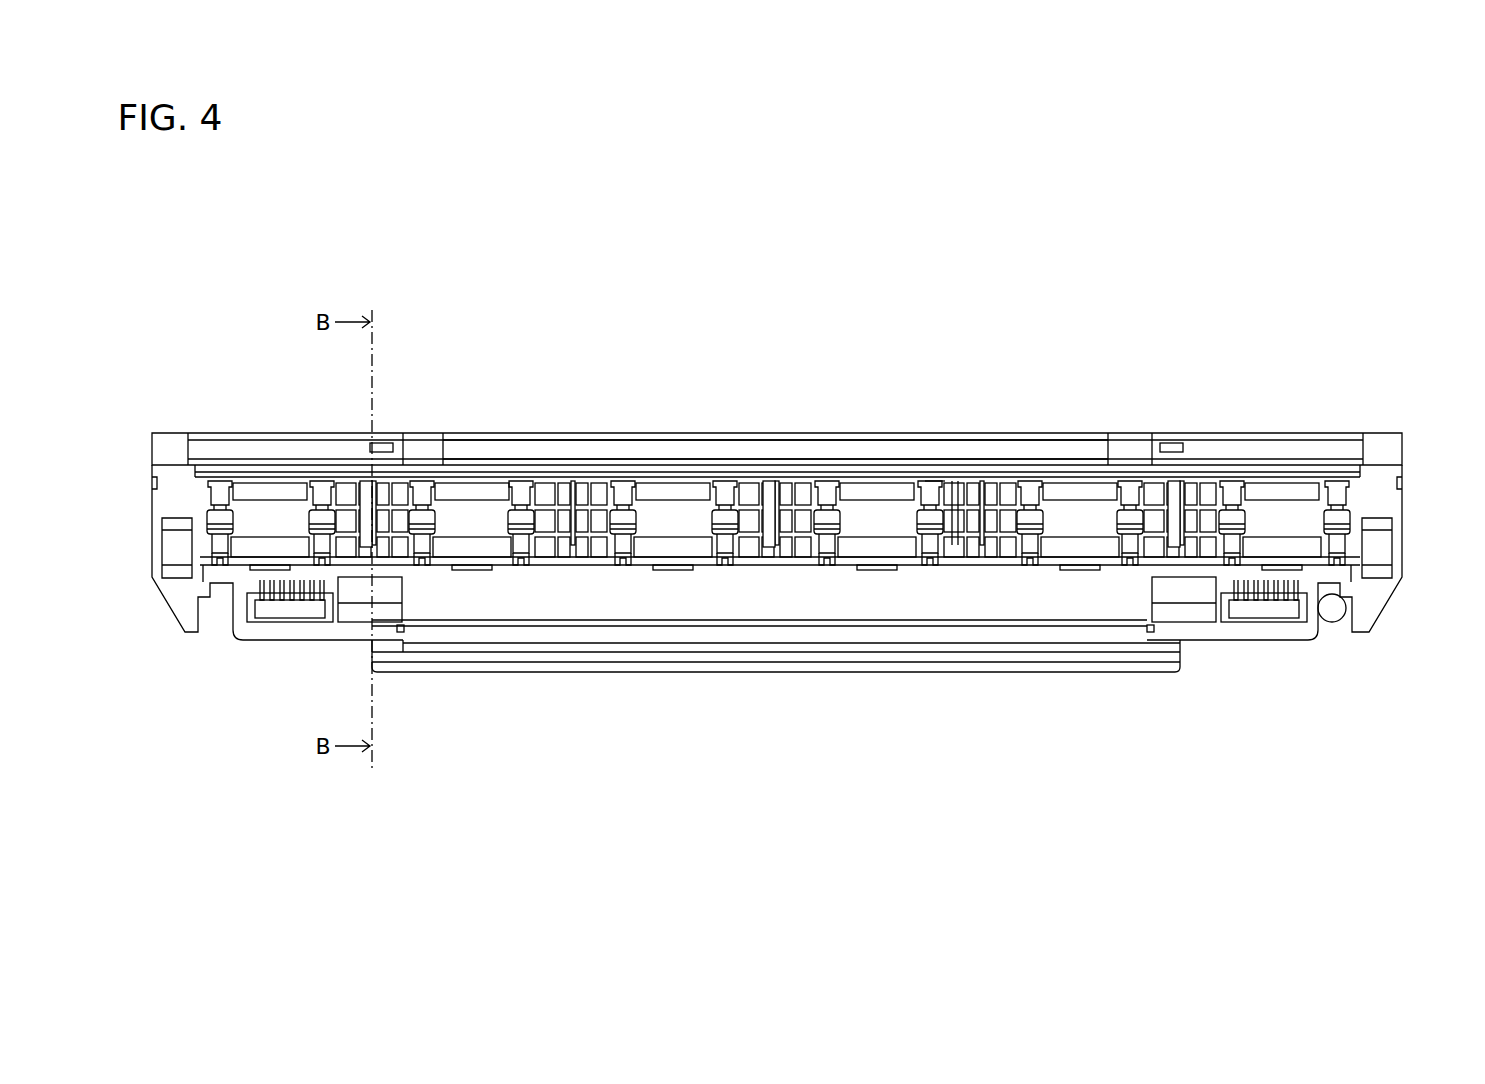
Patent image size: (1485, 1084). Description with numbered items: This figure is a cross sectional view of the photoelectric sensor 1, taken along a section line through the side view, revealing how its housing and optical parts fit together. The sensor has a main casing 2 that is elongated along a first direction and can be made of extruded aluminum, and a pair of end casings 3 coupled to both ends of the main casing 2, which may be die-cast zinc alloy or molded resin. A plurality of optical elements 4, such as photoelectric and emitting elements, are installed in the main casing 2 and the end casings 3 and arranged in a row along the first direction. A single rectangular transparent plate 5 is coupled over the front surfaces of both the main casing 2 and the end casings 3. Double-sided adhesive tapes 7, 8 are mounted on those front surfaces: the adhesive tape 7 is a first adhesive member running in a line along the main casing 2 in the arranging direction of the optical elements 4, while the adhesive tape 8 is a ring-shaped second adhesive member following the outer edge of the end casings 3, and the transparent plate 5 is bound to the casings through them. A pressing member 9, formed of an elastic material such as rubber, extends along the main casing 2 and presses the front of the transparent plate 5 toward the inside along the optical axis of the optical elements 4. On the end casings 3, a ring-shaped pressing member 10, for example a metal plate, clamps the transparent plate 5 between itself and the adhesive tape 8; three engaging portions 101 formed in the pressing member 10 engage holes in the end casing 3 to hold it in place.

The photoelectric sensor 1 is at (1275, 292).
The main casing 2 is at (1024, 672).
The end casing 3 is at (168, 610).
The optical element 4 is at (322, 556).
The transparent plate 5 is at (929, 468).
The double-sided adhesive tape 7 is at (986, 473).
The double-sided adhesive tape 8 is at (306, 470).
The pressing member 9 is at (1052, 450).
The pressing member 10 is at (251, 442).
The engaging portion 101 is at (376, 442).